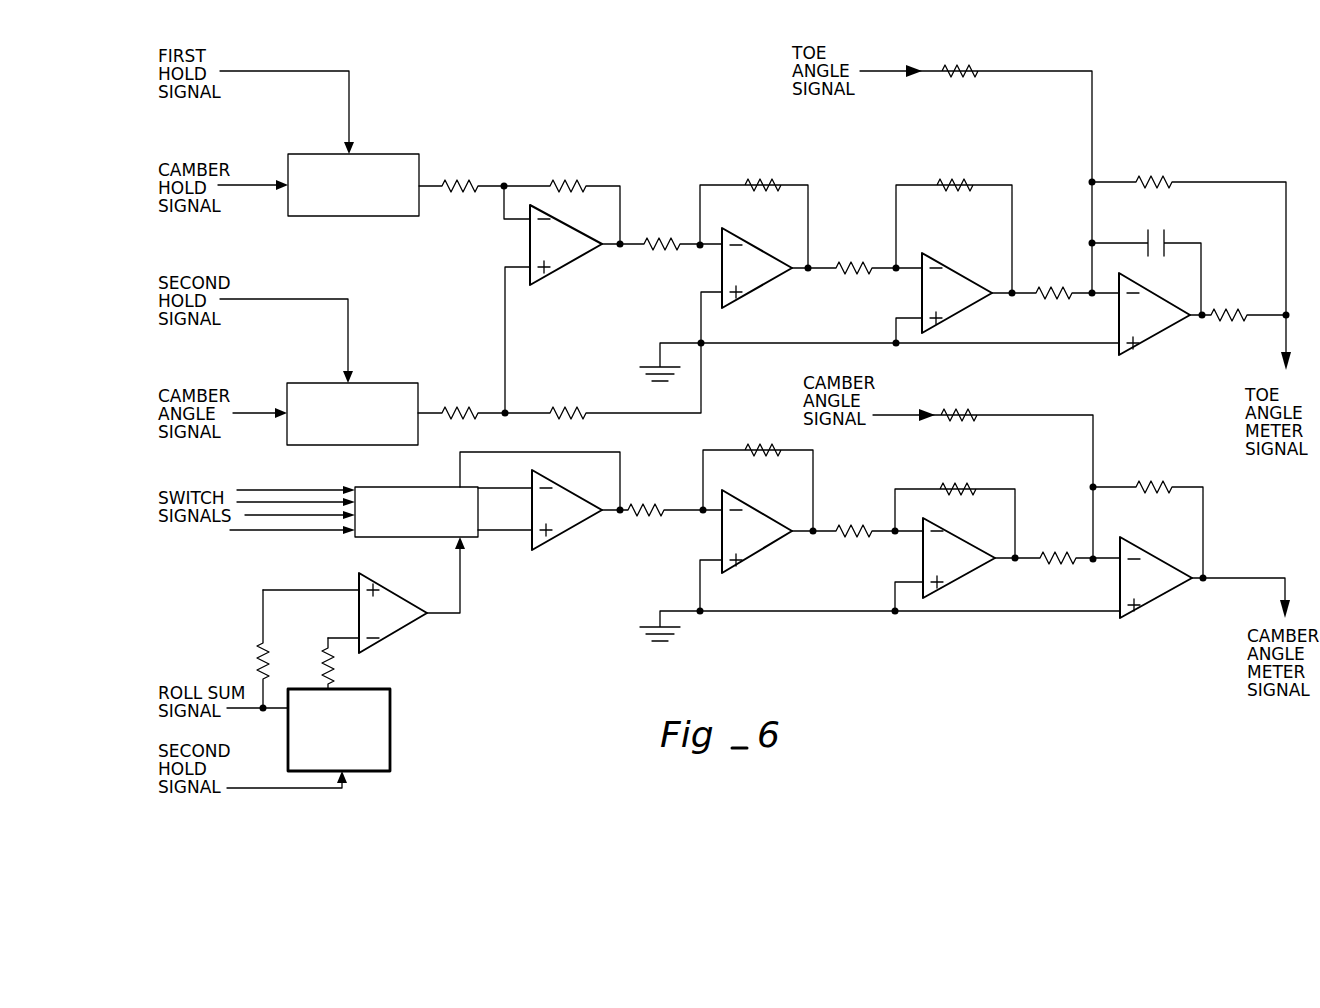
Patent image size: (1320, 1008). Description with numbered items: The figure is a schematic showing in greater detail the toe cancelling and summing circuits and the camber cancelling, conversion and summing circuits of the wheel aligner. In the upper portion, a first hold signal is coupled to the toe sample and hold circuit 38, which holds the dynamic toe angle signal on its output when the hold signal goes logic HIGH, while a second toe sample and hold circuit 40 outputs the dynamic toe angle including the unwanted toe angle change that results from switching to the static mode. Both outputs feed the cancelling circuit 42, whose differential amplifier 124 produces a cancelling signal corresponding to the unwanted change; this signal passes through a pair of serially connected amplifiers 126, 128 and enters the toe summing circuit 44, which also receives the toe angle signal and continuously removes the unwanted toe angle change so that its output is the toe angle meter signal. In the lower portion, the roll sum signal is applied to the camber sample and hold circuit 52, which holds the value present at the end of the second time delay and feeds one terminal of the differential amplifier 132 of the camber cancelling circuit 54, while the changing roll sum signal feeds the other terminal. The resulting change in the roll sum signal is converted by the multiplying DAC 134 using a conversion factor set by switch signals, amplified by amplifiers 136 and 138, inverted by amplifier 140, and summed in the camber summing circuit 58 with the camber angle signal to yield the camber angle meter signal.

The toe sample and hold circuit 38 is at (382, 154).
The toe sample and hold circuit 40 is at (403, 383).
The cancelling circuit 42 is at (718, 124).
The toe summing circuit 44 is at (1216, 246).
The camber sample and hold circuit 52 is at (392, 738).
The camber cancelling circuit 54 is at (285, 630).
The camber summing circuit 58 is at (1162, 612).
The differential amplifier 124 is at (612, 288).
The amplifier 126 is at (797, 222).
The amplifier 128 is at (992, 217).
The differential amplifier 132 is at (405, 628).
The multiplying digital-to-analog converter 134 is at (355, 537).
The amplifier 136 is at (555, 540).
The amplifier 138 is at (762, 553).
The amplifier 140 is at (972, 578).